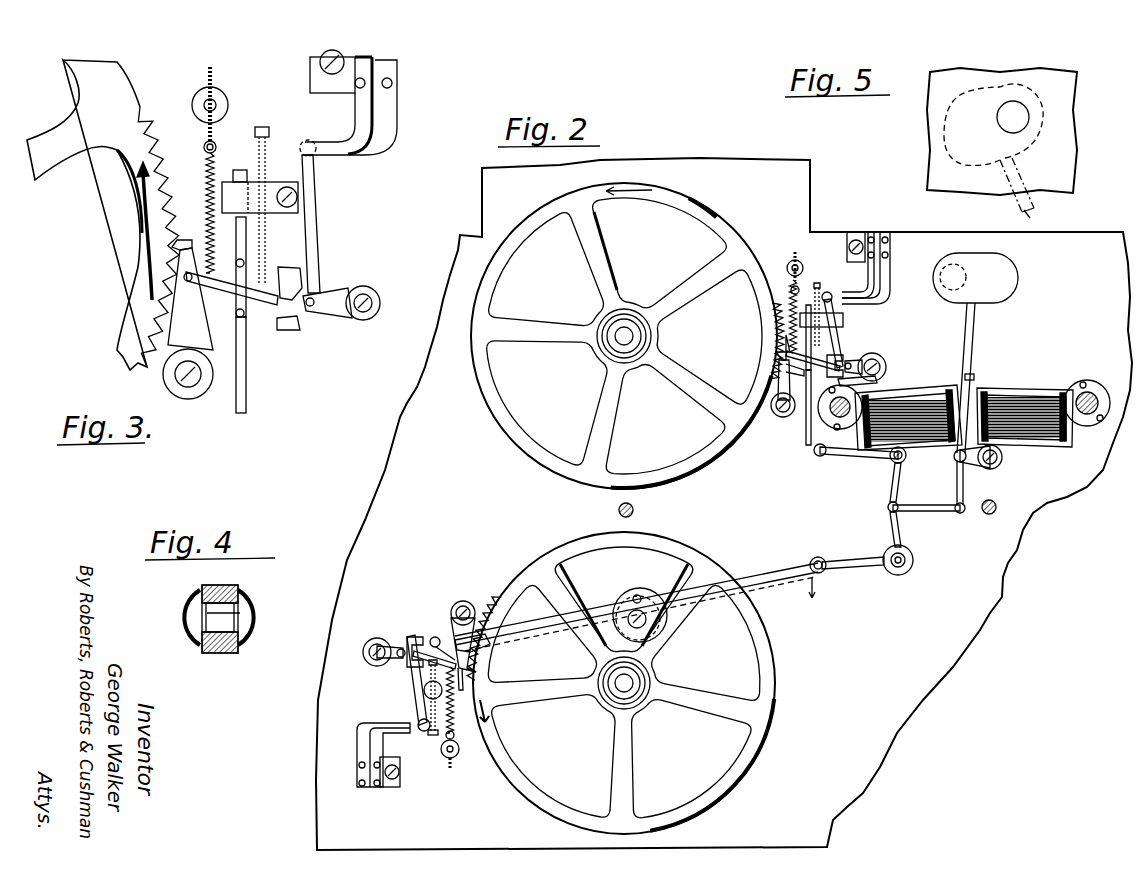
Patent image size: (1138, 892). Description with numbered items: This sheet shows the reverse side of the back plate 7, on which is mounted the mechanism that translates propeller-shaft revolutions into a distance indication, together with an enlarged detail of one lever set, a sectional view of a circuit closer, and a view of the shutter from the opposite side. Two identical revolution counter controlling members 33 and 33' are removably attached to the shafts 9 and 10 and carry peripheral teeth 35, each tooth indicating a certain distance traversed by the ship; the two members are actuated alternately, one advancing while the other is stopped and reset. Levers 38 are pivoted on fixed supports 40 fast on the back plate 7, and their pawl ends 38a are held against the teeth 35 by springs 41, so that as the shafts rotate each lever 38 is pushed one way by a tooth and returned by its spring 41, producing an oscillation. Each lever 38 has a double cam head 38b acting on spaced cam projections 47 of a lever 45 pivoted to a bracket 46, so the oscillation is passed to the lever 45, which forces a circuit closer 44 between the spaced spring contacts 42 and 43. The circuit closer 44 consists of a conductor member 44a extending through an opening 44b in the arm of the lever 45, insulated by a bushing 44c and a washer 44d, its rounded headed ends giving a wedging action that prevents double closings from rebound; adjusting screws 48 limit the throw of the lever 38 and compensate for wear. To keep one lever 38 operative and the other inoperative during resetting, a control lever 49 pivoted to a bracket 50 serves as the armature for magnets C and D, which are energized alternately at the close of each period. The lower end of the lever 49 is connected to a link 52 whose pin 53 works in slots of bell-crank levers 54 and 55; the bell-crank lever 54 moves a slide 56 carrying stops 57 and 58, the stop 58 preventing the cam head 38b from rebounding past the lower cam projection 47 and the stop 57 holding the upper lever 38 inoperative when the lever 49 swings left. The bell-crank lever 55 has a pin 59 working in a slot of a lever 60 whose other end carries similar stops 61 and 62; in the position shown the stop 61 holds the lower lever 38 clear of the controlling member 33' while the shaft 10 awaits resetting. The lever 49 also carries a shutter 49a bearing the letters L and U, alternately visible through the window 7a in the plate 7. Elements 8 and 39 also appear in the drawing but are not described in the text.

In FIG. 2, the back plate 7 is at (950, 648).
In FIG. 5, the back plate 7 is at (1060, 163).
In FIG. 2, the window 7a is at (966, 277).
In FIG. 5, the window 7a is at (1030, 118).
In FIG. 2, the stud 8 is at (637, 509).
In FIG. 2, the shaft 9 is at (630, 340).
In FIG. 2, the shaft 10 is at (630, 682).
In FIG. 2, the revolution counter controlling member 33 is at (624, 336).
In FIG. 3, the revolution counter controlling member 33 is at (99, 213).
In FIG. 2, the revolution counter controlling member 33' is at (653, 683).
In FIG. 2, the teeth 35 is at (777, 305).
In FIG. 3, the teeth 35 is at (172, 193).
In FIG. 2, the lever 38 is at (800, 405).
In FIG. 3, the lever 38 is at (240, 283).
In FIG. 2, the pawl end of lever 38a is at (778, 334).
In FIG. 3, the pawl end of lever 38a is at (183, 240).
In FIG. 2, the double cam head 38b is at (884, 380).
In FIG. 3, the double cam head 38b is at (279, 330).
In FIG. 2, the pawl arm 39 is at (786, 372).
In FIG. 2, the fixed support 40 is at (781, 418).
In FIG. 3, the fixed support 40 is at (213, 360).
In FIG. 2, the spring 41 is at (800, 300).
In FIG. 3, the spring 41 is at (210, 170).
In FIG. 2, the spring contact 42 is at (880, 268).
In FIG. 3, the spring contact 42 is at (393, 115).
In FIG. 2, the spring contact 43 is at (884, 285).
In FIG. 3, the spring contact 43 is at (360, 115).
In FIG. 2, the circuit closer 44 is at (834, 300).
In FIG. 3, the circuit closer 44 is at (320, 156).
In FIG. 4, the circuit closer 44 is at (200, 595).
In FIG. 4, the conductor member 44a is at (200, 625).
In FIG. 4, the opening 44b is at (240, 635).
In FIG. 4, the bushing 44c is at (203, 588).
In FIG. 4, the washer 44d is at (240, 588).
In FIG. 2, the lever 45 is at (845, 338).
In FIG. 3, the lever 45 is at (312, 198).
In FIG. 4, the lever 45 is at (225, 655).
In FIG. 2, the bracket 46 is at (878, 357).
In FIG. 3, the bracket 46 is at (340, 290).
In FIG. 2, the cam projection 47 is at (850, 352).
In FIG. 3, the cam projection 47 is at (300, 275).
In FIG. 2, the adjusting screw 48 is at (818, 283).
In FIG. 3, the adjusting screw 48 is at (265, 240).
In FIG. 2, the control lever 49 is at (978, 380).
In FIG. 2, the shutter 49a is at (1018, 285).
In FIG. 2, the bracket 50 is at (988, 463).
In FIG. 2, the link 52 is at (938, 512).
In FIG. 2, the pin 53 is at (888, 510).
In FIG. 2, the bell-crank lever 54 is at (896, 462).
In FIG. 2, the bell-crank lever 55 is at (870, 566).
In FIG. 2, the slide 56 is at (815, 455).
In FIG. 3, the slide 56 is at (247, 390).
In FIG. 2, the stop pin 57 is at (820, 340).
In FIG. 3, the stop pin 57 is at (225, 287).
In FIG. 2, the stop pin 58 is at (796, 378).
In FIG. 3, the stop pin 58 is at (245, 340).
In FIG. 2, the pin 59 is at (822, 575).
In FIG. 2, the lever 60 is at (758, 580).
In FIG. 2, the stop pin 61 is at (455, 648).
In FIG. 2, the stop pin 62 is at (436, 637).
In FIG. 2, the magnet C is at (1010, 390).
In FIG. 2, the magnet D is at (934, 445).